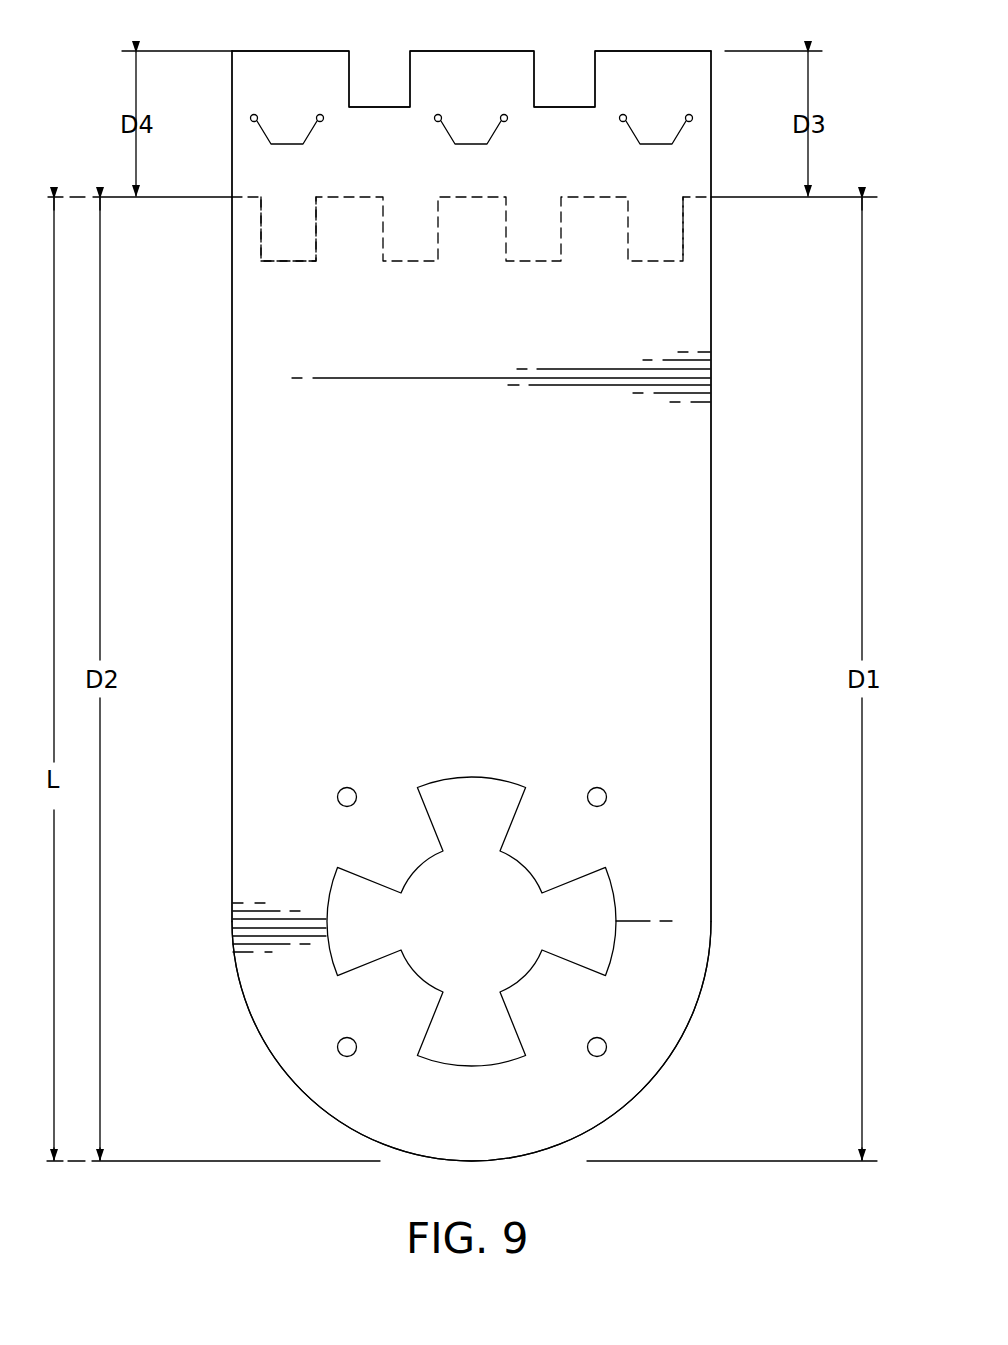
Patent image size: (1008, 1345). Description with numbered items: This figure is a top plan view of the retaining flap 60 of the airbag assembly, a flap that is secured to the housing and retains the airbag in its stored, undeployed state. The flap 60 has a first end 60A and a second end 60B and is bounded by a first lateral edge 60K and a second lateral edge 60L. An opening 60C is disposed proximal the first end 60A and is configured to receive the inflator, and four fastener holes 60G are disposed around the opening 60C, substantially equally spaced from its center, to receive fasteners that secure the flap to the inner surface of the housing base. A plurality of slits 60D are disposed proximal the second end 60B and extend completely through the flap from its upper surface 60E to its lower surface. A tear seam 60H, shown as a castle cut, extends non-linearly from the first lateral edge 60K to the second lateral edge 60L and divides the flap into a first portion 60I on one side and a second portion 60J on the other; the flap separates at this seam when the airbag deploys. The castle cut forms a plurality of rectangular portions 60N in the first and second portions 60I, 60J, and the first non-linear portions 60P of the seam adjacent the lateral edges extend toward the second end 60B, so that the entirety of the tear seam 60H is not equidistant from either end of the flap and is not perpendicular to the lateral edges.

The retaining flap 60 is at (228, 597).
The first end 60A is at (548, 1150).
The second end 60B is at (479, 51).
The opening 60C is at (527, 872).
The slits 60D is at (287, 144).
The upper surface 60E is at (625, 518).
The fastener holes 60G is at (339, 789).
The tear seam 60H is at (290, 261).
The first portion 60I is at (310, 460).
The second portion 60J is at (291, 78).
The first lateral edge 60K is at (711, 640).
The second lateral edge 60L is at (232, 723).
The rectangular portions 60N is at (409, 215).
The first non-linear portion 60P is at (684, 243).